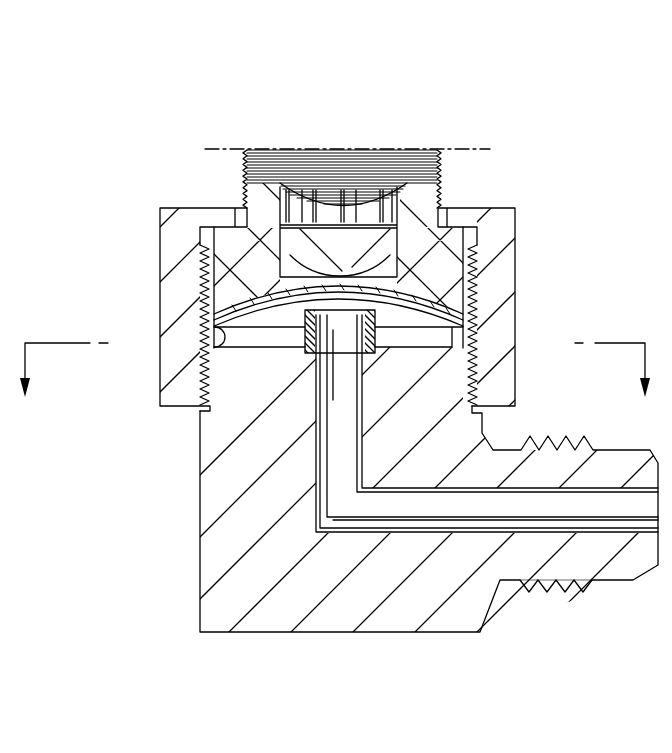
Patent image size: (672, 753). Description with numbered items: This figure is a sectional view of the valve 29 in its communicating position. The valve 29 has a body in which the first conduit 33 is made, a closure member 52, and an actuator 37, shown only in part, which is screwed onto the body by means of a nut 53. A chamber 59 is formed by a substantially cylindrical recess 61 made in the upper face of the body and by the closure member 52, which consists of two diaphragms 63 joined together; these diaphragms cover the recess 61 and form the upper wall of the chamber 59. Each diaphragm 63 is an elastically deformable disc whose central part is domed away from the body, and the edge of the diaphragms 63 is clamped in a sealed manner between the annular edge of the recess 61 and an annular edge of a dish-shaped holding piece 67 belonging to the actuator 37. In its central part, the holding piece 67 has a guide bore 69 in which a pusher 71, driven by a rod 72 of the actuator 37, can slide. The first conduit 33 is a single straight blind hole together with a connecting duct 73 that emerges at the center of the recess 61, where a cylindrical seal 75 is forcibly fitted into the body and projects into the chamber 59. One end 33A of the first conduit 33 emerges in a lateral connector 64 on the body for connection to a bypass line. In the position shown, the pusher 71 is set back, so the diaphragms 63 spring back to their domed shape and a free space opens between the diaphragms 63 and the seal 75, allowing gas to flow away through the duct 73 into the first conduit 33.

The valve 29 is at (442, 92).
The actuator 37 is at (369, 136).
The rod 72 is at (350, 218).
The guide bore 69 is at (390, 212).
The pusher 71 is at (313, 252).
The holding piece 67 is at (240, 274).
The nut 53 is at (183, 327).
The recess 61 is at (215, 350).
The connecting duct 73 is at (330, 403).
The closure member 52 is at (410, 278).
The diaphragms 63 is at (445, 289).
The cylindrical seal 75 is at (427, 323).
The chamber 59 is at (428, 345).
The first conduit 33 is at (428, 517).
The lateral connector 64 is at (563, 560).
The end of the first conduit 33A is at (630, 515).